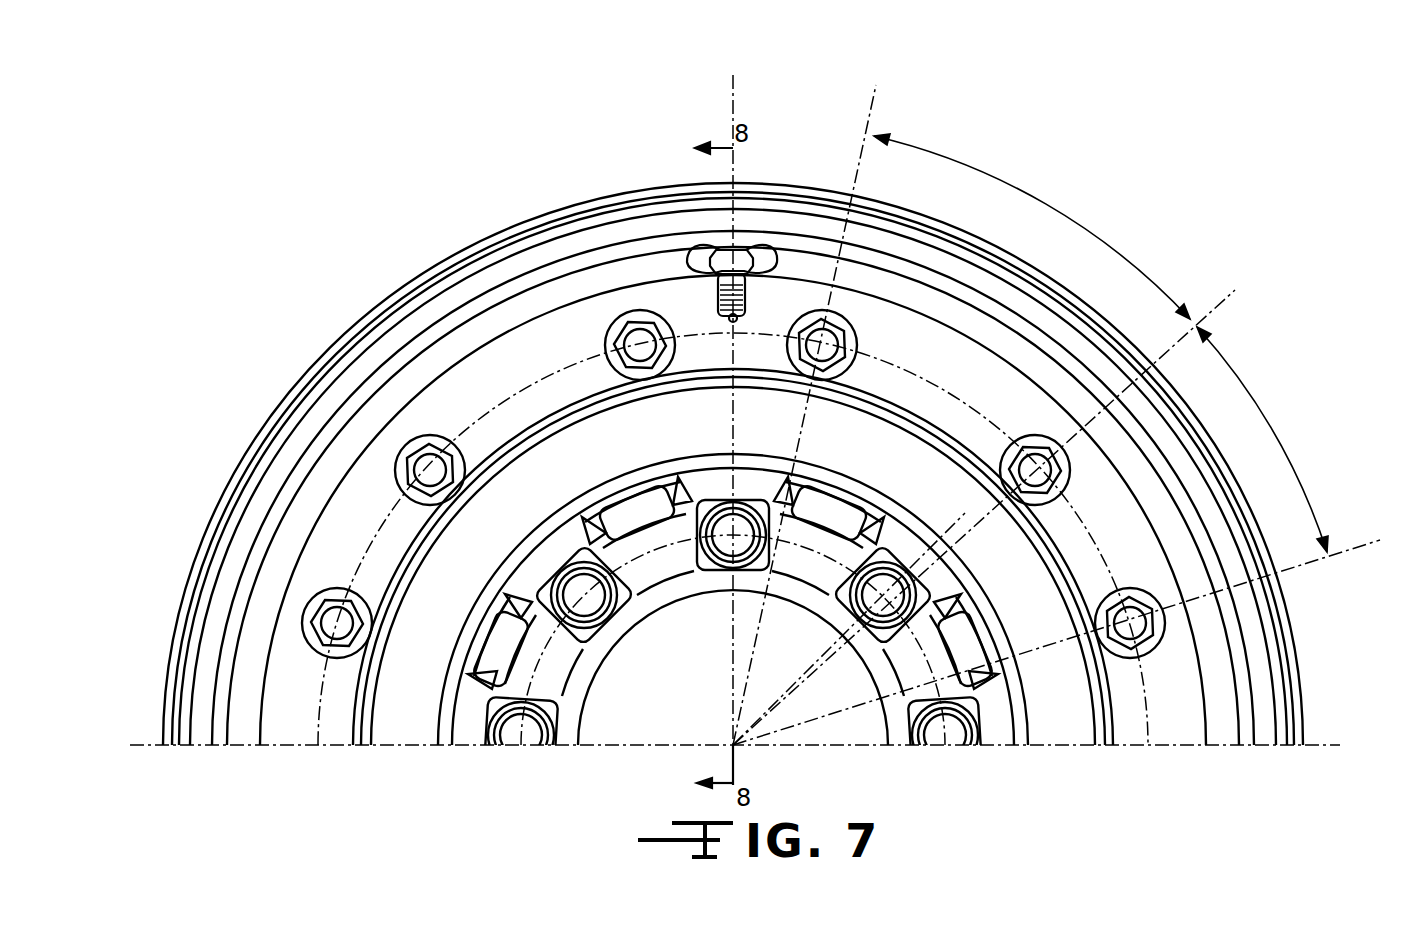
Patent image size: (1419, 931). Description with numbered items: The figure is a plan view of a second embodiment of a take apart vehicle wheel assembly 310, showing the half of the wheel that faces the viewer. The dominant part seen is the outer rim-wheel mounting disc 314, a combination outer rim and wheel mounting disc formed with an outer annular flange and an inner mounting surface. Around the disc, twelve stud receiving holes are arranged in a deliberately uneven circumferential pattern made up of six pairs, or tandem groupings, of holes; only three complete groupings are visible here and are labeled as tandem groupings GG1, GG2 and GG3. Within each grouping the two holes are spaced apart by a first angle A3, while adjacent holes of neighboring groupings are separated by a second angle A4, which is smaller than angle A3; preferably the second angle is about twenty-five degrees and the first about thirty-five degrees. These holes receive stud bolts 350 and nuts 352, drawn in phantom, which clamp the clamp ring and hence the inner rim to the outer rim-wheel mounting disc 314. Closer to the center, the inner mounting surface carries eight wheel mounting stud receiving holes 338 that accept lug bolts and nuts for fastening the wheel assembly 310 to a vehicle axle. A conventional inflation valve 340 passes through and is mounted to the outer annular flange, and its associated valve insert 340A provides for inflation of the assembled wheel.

The take apart vehicle wheel assembly 310 is at (772, 157).
The outer rim-wheel mounting disc 314 is at (1303, 688).
The wheel mounting stud receiving holes 338 is at (718, 572).
The inflation valve 340 is at (693, 307).
The valve insert 340A is at (733, 322).
The stud bolts 350 is at (1126, 632).
The nuts 352 is at (1150, 640).
The tandem grouping of stud receiving holes GG1 is at (355, 525).
The tandem grouping of stud receiving holes GG2 is at (722, 252).
The tandem grouping of stud receiving holes GG3 is at (1078, 552).
The first angle A3 is at (1030, 195).
The second angle A4 is at (1262, 432).